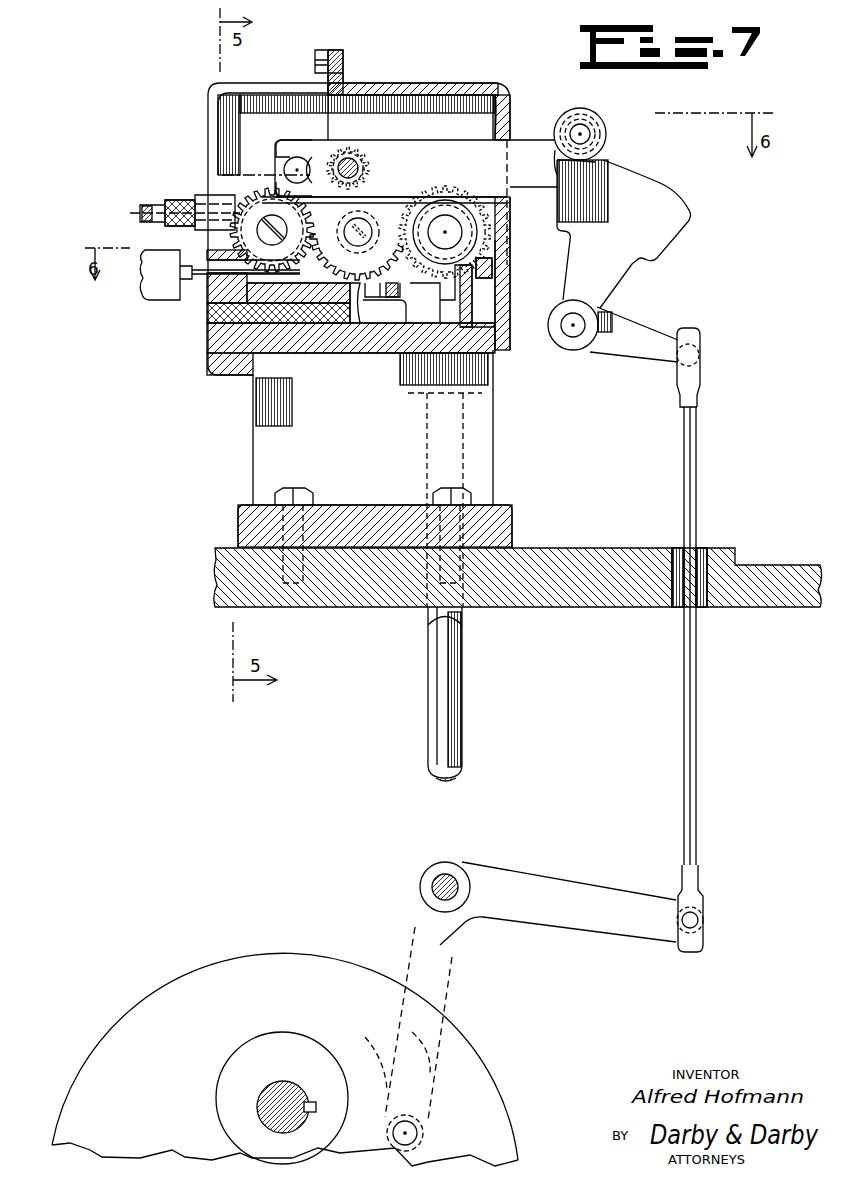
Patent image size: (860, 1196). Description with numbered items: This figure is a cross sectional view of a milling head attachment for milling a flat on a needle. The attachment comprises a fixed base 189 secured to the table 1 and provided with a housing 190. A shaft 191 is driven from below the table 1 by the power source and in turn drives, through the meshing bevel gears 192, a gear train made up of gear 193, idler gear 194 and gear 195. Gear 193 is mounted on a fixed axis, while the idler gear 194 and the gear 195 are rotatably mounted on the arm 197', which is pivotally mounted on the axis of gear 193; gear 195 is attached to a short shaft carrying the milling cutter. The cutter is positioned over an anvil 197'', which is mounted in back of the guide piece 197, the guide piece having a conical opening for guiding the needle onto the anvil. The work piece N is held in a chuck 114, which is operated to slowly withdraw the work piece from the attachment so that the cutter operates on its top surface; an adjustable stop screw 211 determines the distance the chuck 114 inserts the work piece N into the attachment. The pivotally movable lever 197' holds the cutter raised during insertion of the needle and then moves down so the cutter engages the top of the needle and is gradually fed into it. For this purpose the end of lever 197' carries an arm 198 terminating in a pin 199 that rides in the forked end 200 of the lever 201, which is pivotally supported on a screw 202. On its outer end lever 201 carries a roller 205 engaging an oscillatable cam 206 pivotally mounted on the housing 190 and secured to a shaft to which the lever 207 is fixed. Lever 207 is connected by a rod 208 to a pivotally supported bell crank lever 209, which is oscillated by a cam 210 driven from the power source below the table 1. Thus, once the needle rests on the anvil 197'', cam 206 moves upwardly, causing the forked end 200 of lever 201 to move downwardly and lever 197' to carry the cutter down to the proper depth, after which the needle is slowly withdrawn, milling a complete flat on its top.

The table 1 is at (570, 548).
The chuck 114 is at (152, 292).
The fixed base 189 is at (495, 462).
The housing 190 is at (325, 347).
The shaft 191 is at (470, 432).
The meshing bevel gears 192 is at (498, 265).
The gear 193 is at (490, 220).
The idler gear 194 is at (368, 212).
The gear 195 is at (240, 197).
The guide piece 197 is at (255, 295).
The arm 197' is at (450, 177).
The anvil 197'' is at (251, 336).
The arm 198 is at (278, 185).
The pin 199 is at (300, 168).
The forked end 200 is at (288, 147).
The lever 201 is at (428, 144).
The screw 202 is at (352, 164).
The roller 205 is at (600, 150).
The cam 206 is at (672, 205).
The lever 207 is at (647, 345).
The rod 208 is at (684, 430).
The bell crank lever 209 is at (552, 885).
The cam 210 is at (345, 880).
The adjustable stop screw 211 is at (150, 205).
The work piece N is at (196, 282).